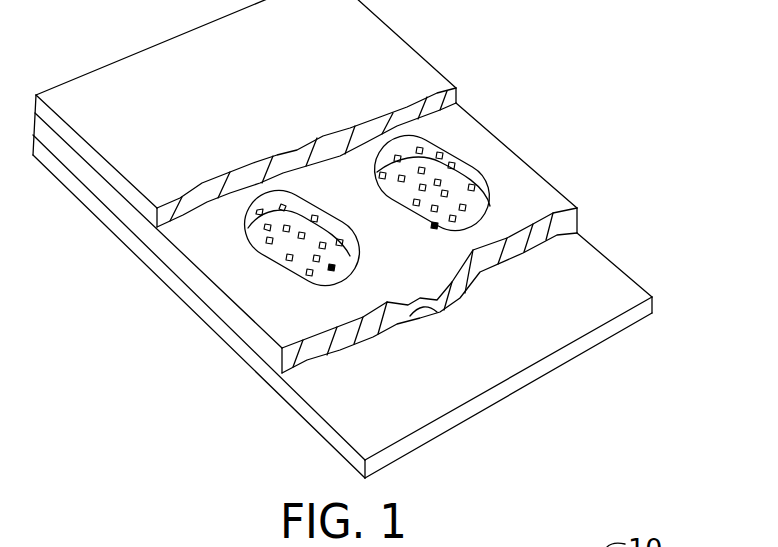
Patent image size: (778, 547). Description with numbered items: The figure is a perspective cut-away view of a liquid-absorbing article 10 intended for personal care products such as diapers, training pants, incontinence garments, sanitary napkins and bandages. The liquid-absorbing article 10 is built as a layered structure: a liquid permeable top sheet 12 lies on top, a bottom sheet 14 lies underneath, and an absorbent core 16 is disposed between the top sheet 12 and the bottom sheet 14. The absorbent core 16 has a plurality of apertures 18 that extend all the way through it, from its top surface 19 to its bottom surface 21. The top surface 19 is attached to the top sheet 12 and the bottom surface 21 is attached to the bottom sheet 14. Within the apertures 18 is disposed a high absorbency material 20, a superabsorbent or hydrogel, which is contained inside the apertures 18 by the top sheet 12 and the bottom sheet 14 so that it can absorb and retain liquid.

The liquid-absorbing article 10 is at (606, 75).
The liquid permeable top sheet 12 is at (163, 62).
The bottom sheet 14 is at (507, 364).
The absorbent core 16 is at (284, 308).
The apertures 18 is at (300, 203).
The top surface 19 is at (533, 187).
The high absorbency material 20 is at (447, 156).
The bottom surface 21 is at (440, 305).